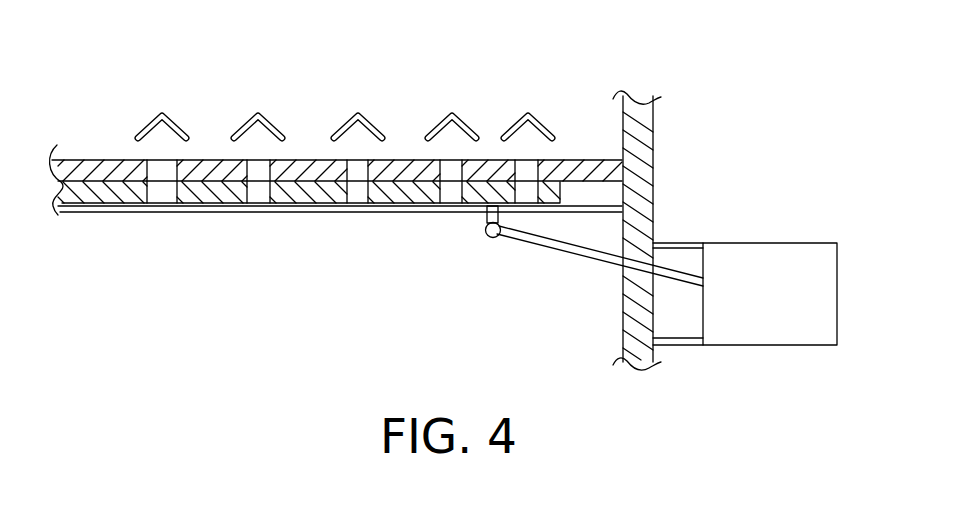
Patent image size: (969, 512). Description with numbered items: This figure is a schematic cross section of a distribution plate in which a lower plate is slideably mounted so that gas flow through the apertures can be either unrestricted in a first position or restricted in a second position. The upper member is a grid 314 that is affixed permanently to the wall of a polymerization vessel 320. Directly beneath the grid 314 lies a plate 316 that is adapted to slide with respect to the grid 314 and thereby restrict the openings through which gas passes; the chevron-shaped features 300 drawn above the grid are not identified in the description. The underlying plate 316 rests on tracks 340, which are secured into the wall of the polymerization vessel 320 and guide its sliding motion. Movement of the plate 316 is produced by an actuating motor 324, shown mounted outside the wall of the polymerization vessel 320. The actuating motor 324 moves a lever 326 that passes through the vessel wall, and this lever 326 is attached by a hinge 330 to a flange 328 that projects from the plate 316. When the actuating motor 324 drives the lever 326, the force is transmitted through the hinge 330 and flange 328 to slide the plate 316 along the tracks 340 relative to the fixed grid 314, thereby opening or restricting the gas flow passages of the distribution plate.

The grooming elements (chevron bristles) 300 is at (170, 117).
The grid 314 is at (95, 159).
The plate 316 is at (117, 205).
The tracks 340 is at (241, 214).
The polymerization vessel 320 is at (653, 140).
The actuating motor 324 is at (780, 243).
The lever 326 is at (599, 259).
The flange 328 is at (486, 221).
The hinge 330 is at (486, 236).